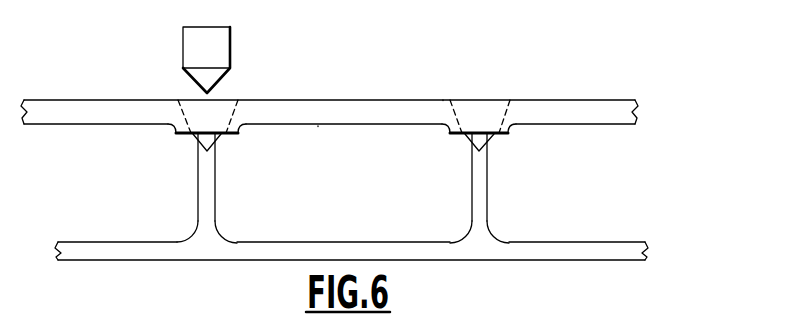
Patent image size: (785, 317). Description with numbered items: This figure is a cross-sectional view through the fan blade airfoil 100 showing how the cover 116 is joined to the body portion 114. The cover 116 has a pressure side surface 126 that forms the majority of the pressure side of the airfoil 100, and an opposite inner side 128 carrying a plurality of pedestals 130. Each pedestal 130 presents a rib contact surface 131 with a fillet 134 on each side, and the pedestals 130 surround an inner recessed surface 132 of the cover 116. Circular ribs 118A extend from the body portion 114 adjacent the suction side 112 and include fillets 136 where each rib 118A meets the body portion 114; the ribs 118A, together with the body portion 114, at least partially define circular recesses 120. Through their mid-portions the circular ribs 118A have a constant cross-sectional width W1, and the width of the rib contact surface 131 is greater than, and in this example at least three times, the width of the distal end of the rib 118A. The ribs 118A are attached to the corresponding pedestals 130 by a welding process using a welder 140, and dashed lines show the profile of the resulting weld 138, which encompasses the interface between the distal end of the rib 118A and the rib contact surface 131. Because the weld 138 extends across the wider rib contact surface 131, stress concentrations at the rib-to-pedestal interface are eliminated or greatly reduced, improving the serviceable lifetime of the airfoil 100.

The airfoil 100 is at (688, 97).
The suction side 112 is at (522, 260).
The body portion 114 is at (142, 252).
The cover 116 is at (605, 108).
The circular rib 118A is at (216, 181).
The circular recess 120 is at (344, 158).
The pressure side surface 126 is at (443, 100).
The inner side 128 is at (607, 125).
The pedestal 130 is at (175, 127).
The rib contact surface 131 is at (193, 138).
The inner recessed surface 132 is at (318, 127).
The fillet 134 is at (239, 126).
The fillet 136 is at (191, 236).
The weld 138 is at (247, 100).
The welder 140 is at (220, 45).
The cross-sectional width W1 is at (158, 196).